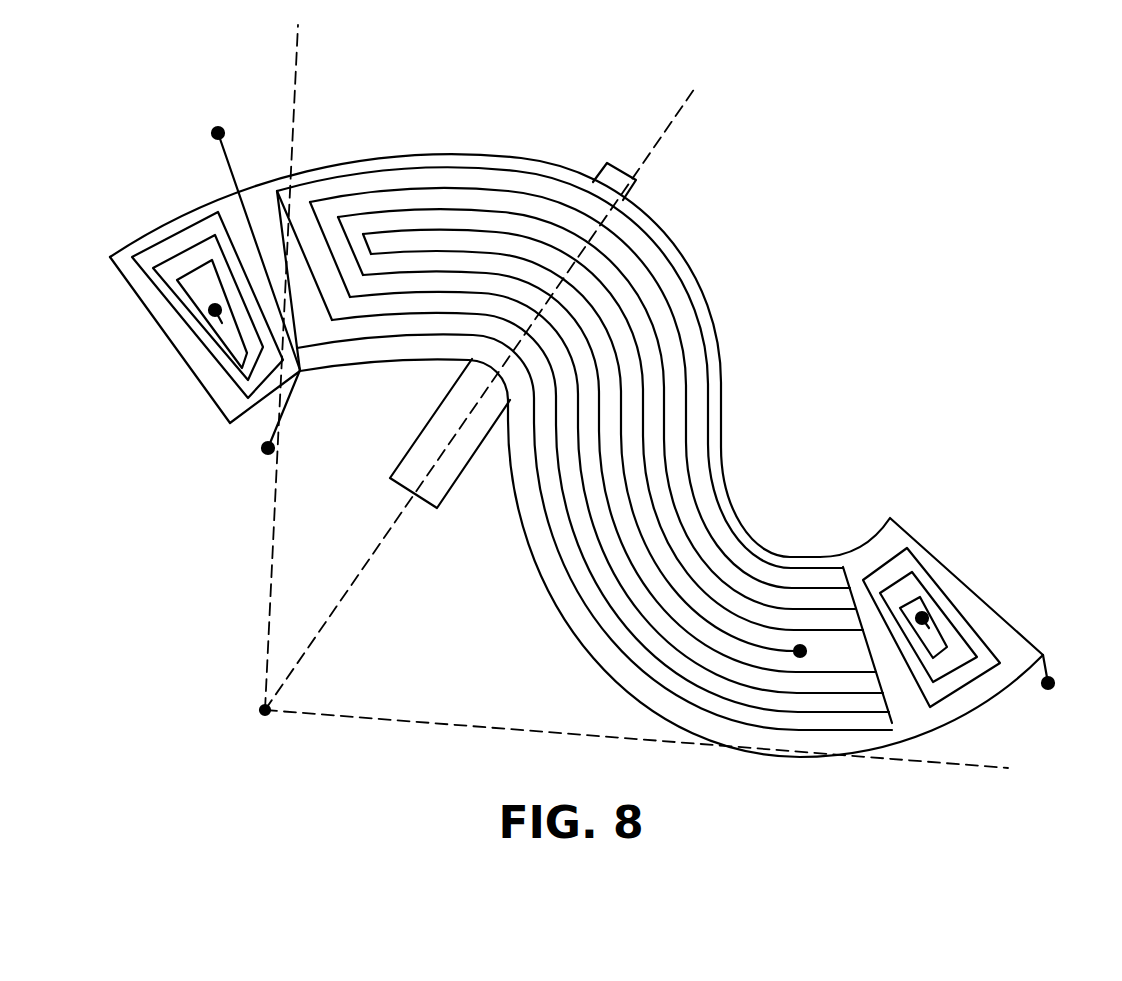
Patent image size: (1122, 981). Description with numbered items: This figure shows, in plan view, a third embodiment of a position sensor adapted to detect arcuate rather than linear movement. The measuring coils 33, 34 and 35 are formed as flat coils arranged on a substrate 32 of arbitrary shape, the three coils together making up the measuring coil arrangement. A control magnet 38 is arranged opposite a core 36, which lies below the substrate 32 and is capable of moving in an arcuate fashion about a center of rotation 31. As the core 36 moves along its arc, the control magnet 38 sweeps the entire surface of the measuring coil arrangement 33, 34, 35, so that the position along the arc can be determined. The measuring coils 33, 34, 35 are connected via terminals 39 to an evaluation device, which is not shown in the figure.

The center of rotation 31 is at (268, 716).
The substrate 32 is at (575, 605).
The measuring coil 33 is at (433, 190).
The measuring coil 34 is at (198, 232).
The measuring coil 35 is at (930, 585).
The core 36 is at (530, 550).
The control magnet 38 is at (610, 176).
The terminals 39 is at (218, 133).